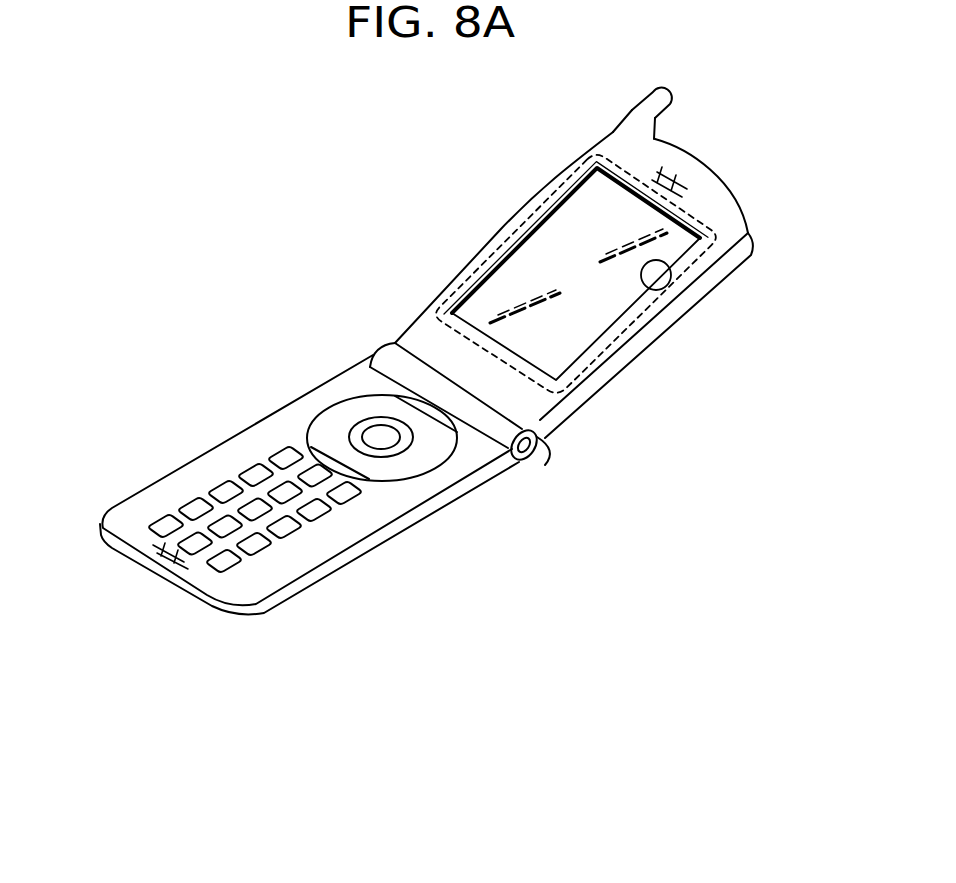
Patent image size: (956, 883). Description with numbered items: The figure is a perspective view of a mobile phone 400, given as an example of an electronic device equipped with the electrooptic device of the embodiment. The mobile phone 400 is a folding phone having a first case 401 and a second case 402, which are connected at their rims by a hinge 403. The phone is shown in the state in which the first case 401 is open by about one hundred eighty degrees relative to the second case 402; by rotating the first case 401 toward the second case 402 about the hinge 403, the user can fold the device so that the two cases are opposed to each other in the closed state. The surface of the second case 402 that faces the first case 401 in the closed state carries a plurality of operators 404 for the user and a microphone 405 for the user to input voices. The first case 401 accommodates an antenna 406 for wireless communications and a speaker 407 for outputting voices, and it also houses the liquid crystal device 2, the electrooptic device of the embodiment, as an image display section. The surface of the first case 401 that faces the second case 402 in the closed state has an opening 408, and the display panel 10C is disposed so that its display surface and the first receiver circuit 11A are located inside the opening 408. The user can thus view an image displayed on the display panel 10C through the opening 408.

The mobile phone 400 is at (253, 303).
The first case 401 is at (660, 317).
The second case 402 is at (200, 470).
The hinge 403 is at (537, 457).
The operators 404 is at (330, 510).
The microphone 405 is at (155, 570).
The antenna 406 is at (668, 93).
The speaker 407 is at (678, 172).
The opening 408 is at (650, 289).
The liquid crystal device 2 is at (552, 188).
The display panel 10C is at (538, 262).
The first receiver circuit 11A is at (525, 296).